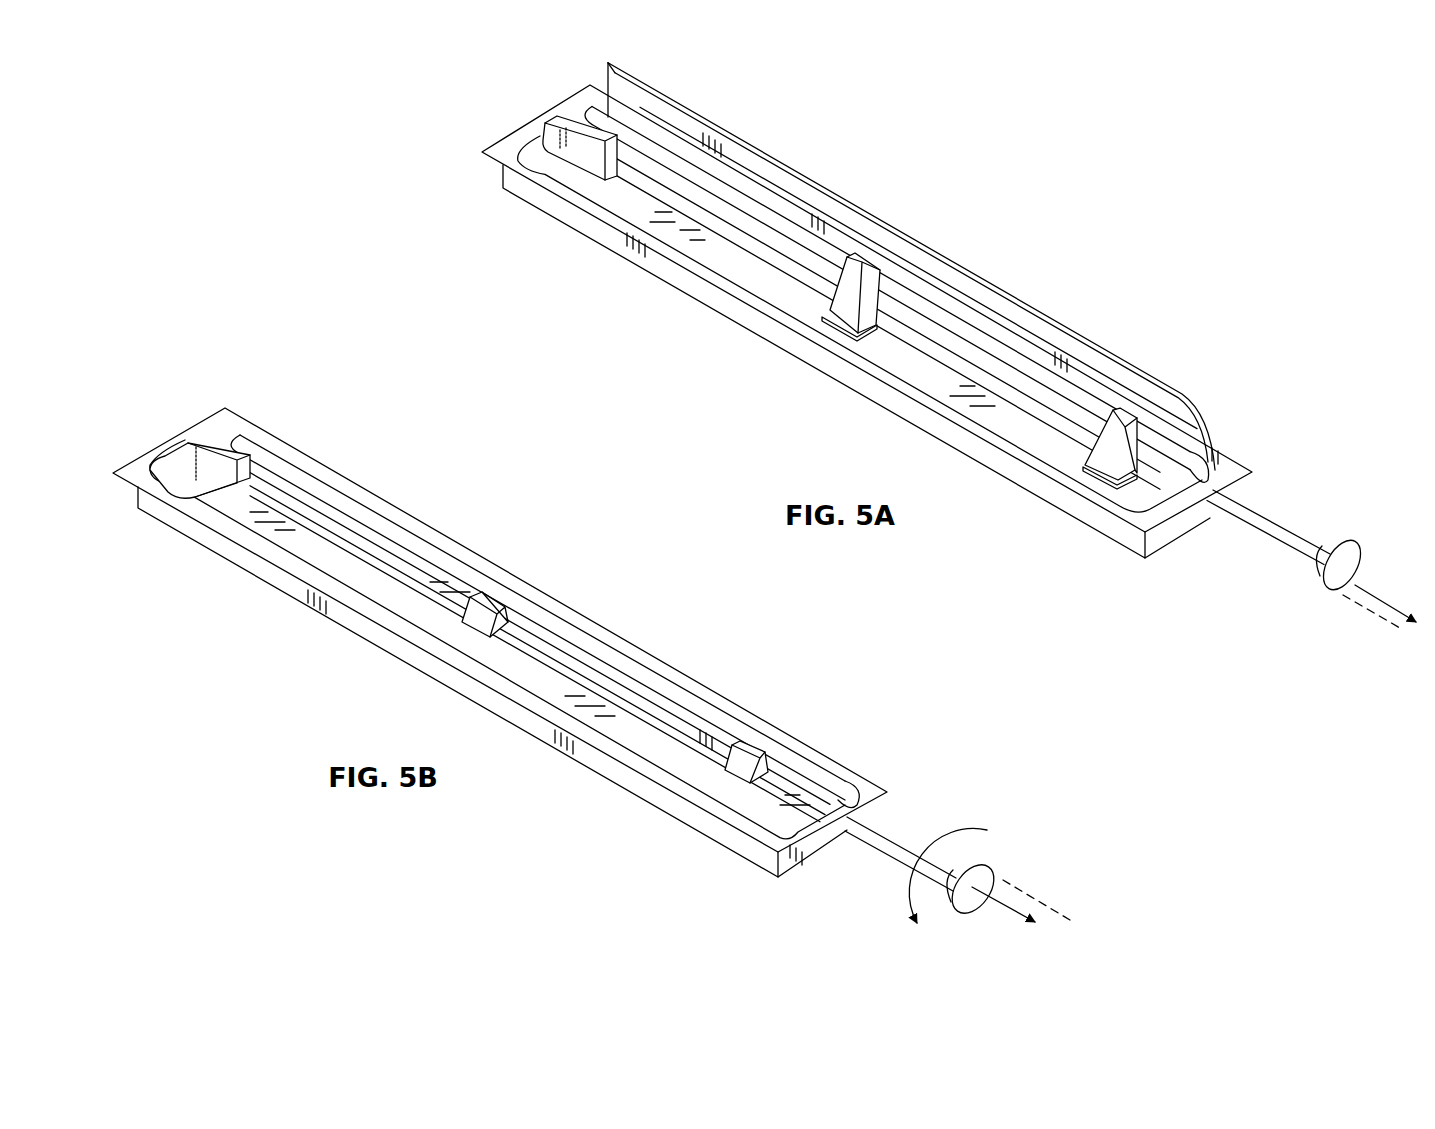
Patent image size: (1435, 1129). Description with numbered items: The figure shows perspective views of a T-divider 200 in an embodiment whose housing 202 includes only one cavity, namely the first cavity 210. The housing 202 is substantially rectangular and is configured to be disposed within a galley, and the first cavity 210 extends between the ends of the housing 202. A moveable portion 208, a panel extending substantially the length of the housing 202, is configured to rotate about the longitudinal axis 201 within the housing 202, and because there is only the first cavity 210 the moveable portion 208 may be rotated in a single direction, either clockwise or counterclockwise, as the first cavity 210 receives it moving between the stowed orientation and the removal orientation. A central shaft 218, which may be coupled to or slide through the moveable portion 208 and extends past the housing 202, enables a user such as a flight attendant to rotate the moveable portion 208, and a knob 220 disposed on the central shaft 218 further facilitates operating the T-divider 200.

In FIG. 5A, the T-divider 200 is at (942, 165).
In FIG. 5B, the T-divider 200 is at (417, 465).
In FIG. 5A, the longitudinal axis 201 is at (1370, 617).
In FIG. 5B, the longitudinal axis 201 is at (1037, 903).
In FIG. 5A, the housing 202 is at (1030, 482).
In FIG. 5B, the housing 202 is at (643, 790).
In FIG. 5A, the moveable portion 208 is at (1107, 370).
In FIG. 5B, the moveable portion 208 is at (313, 567).
In FIG. 5A, the first cavity 210 is at (543, 150).
In FIG. 5B, the first cavity 210 is at (183, 460).
In FIG. 5A, the central shaft 218 is at (1288, 528).
In FIG. 5B, the central shaft 218 is at (902, 840).
In FIG. 5A, the knob 220 is at (1348, 567).
In FIG. 5B, the knob 220 is at (983, 880).